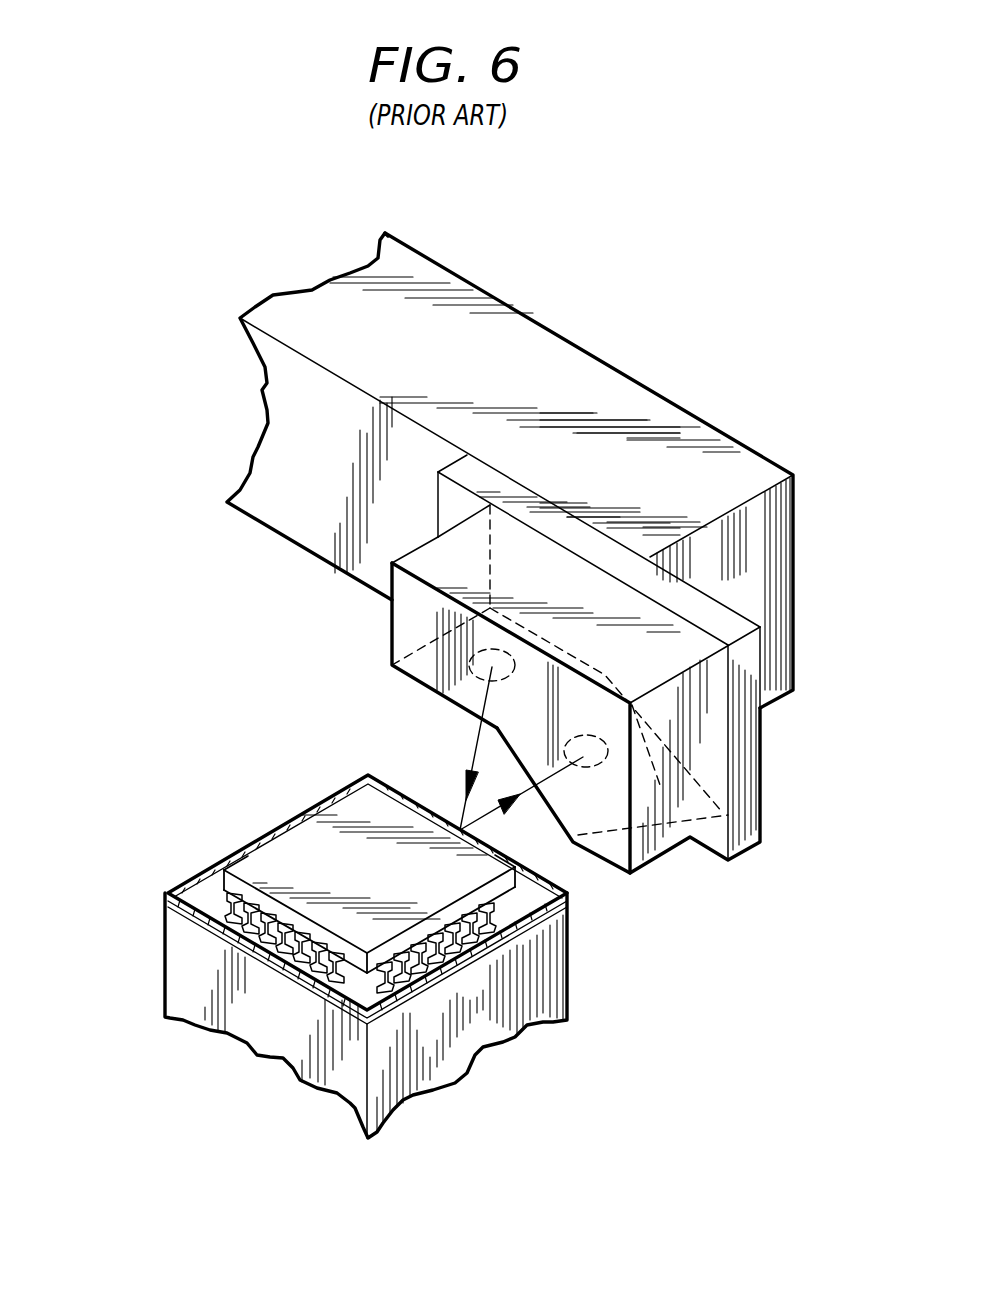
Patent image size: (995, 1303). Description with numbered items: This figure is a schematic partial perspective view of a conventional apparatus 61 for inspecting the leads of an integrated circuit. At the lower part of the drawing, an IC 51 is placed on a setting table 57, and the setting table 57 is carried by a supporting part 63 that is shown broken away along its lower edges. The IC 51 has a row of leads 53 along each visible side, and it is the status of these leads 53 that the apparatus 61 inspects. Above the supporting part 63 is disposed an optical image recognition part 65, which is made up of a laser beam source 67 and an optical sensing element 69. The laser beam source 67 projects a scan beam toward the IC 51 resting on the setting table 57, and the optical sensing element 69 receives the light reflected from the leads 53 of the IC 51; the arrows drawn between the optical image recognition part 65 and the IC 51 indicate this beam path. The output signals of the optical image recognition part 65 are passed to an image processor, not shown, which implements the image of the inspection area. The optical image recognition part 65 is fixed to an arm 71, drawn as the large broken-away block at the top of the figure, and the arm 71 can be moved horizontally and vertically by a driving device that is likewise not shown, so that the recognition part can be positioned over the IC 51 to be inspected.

The apparatus for inspecting leads of an IC 61 is at (590, 240).
The arm 71 is at (626, 372).
The optical image recognition part 65 is at (226, 581).
The laser beam source 67 is at (420, 637).
The optical sensing element 69 is at (517, 747).
The IC 51 is at (293, 848).
The leads 53 is at (332, 970).
The setting table 57 is at (200, 890).
The supporting part 63 is at (548, 963).